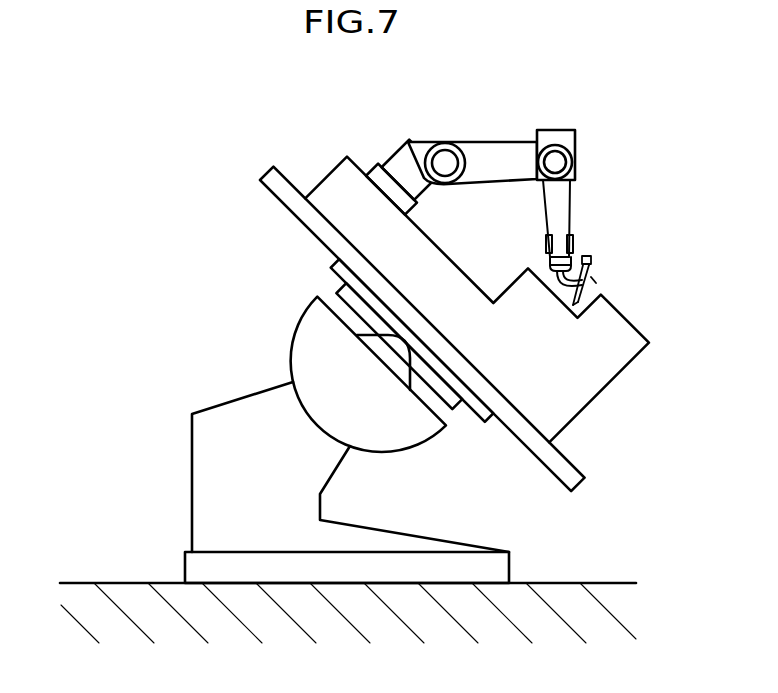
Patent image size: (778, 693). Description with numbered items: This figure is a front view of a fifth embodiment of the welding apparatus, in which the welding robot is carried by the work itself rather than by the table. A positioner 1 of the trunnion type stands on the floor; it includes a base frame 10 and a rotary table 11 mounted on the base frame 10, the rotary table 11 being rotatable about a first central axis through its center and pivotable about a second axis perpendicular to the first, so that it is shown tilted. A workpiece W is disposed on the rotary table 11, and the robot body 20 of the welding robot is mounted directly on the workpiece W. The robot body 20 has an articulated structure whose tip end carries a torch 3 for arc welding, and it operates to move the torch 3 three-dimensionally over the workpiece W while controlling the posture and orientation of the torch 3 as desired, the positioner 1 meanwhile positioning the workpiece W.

The positioner 1 is at (186, 457).
The base frame 10 is at (211, 508).
The rotary table 11 is at (278, 188).
The robot body 20 is at (488, 139).
The torch 3 is at (588, 292).
The workpiece W is at (622, 342).